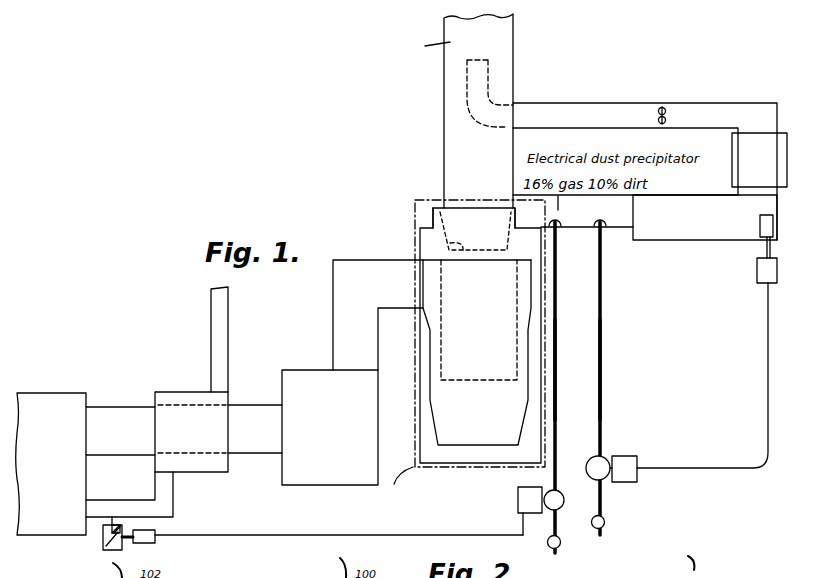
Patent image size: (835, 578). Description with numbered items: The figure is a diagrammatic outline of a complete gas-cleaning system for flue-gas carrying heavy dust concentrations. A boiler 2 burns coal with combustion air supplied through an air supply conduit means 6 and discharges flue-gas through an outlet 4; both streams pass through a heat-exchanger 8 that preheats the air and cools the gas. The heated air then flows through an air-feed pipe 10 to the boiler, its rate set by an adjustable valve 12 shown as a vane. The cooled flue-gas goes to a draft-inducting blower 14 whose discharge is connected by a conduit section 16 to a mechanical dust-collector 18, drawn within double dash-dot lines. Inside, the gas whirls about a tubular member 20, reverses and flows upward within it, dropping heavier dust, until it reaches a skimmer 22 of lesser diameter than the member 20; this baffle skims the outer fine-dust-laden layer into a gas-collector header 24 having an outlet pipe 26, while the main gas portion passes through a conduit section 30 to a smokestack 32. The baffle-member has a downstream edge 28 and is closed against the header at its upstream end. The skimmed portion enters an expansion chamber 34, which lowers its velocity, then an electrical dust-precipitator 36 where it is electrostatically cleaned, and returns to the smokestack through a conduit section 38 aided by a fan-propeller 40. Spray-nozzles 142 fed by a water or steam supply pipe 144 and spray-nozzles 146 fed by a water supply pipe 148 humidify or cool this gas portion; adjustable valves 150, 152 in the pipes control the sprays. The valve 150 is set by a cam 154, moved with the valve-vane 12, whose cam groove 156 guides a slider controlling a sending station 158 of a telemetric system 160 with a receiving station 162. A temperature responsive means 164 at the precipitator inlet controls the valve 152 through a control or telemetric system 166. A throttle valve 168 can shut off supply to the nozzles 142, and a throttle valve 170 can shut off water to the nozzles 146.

The boiler 2 is at (52, 393).
The outlet 4 is at (125, 406).
The air supply conduit means 6 is at (224, 334).
The heat-exchanger 8 is at (178, 390).
The air-feed pipe 10 is at (147, 499).
The adjustable valve 12 is at (105, 519).
The draft-inducting blower 14 is at (313, 371).
The conduit section 16 is at (333, 323).
The mechanical dust-collector 18 is at (413, 220).
The tubular member 20 is at (441, 355).
The skimmer 22 is at (447, 232).
The gas-collector header 24 is at (436, 202).
The outlet pipe 26 is at (575, 211).
The downstream edge 28 is at (450, 243).
The conduit section 30 is at (444, 171).
The smokestack 32 is at (507, 41).
The expansion chamber 34 is at (692, 240).
The electrical dust-precipitator 36 is at (732, 141).
The conduit section 38 is at (626, 104).
The fan-propeller 40 is at (663, 106).
The spray-nozzles 142 is at (568, 386).
The water or steam supply pipe 144 is at (571, 355).
The spray-nozzles 146 is at (613, 377).
The water supply pipe 148 is at (619, 355).
The adjustable valve 150 is at (568, 495).
The adjustable valve 152 is at (611, 460).
The cam 154 is at (103, 534).
The cam groove 156 is at (103, 548).
The sending station 158 is at (147, 543).
The telemetric system 160 is at (264, 543).
The receiving station 162 is at (517, 505).
The temperature responsive means 164 is at (760, 224).
The control or telemetric system 166 is at (687, 468).
The throttle valve 168 is at (548, 542).
The throttle valve 170 is at (605, 522).